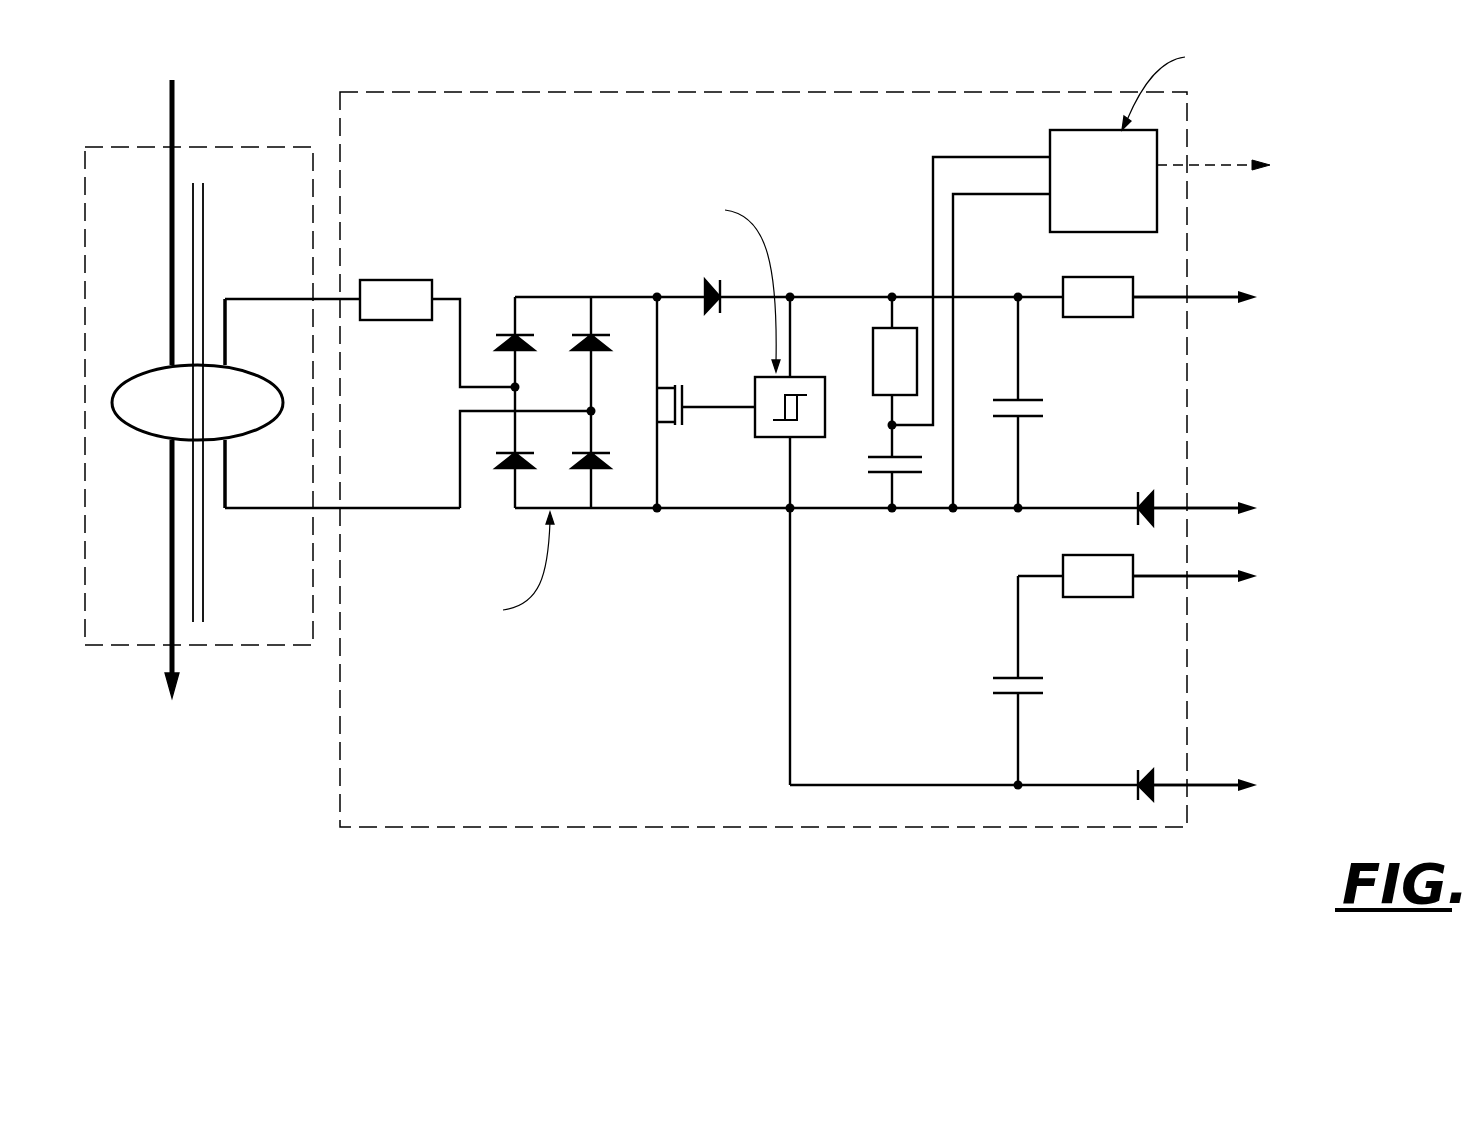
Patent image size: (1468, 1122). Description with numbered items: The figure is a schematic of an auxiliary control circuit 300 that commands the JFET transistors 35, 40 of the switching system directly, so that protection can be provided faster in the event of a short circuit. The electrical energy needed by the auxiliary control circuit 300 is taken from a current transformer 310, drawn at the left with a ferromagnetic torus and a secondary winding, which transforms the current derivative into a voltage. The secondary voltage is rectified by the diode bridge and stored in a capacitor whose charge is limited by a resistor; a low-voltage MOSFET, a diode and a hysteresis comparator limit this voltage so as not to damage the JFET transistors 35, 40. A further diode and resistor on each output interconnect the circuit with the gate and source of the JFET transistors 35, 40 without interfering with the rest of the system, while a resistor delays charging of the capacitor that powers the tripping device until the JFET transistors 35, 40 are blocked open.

The current transformer 310 is at (113, 146).
The auxiliary control circuit 300 is at (460, 90).
The JFET transistor 35 is at (1294, 403).
The JFET transistor 40 is at (1294, 681).